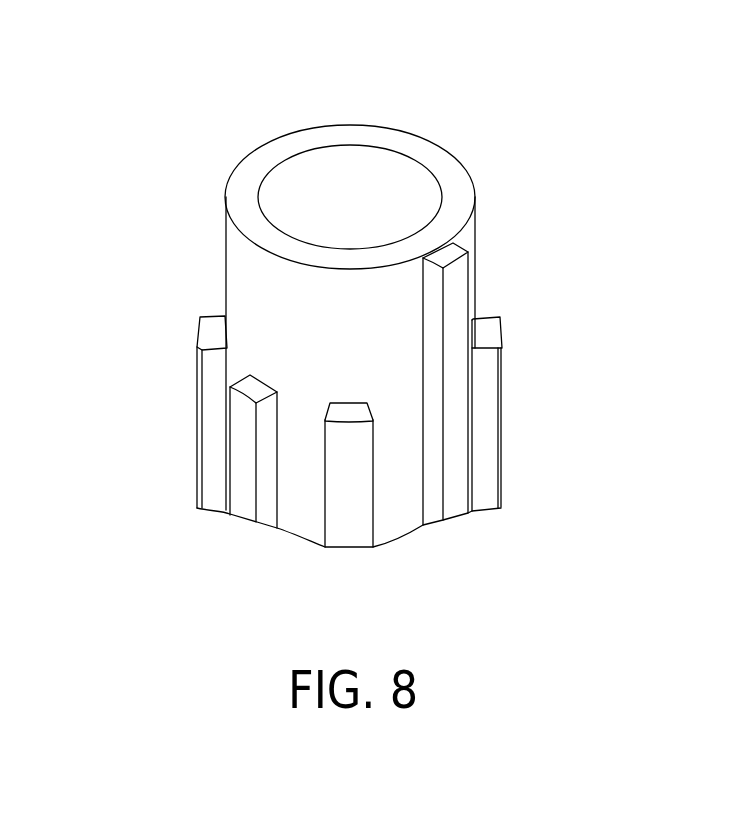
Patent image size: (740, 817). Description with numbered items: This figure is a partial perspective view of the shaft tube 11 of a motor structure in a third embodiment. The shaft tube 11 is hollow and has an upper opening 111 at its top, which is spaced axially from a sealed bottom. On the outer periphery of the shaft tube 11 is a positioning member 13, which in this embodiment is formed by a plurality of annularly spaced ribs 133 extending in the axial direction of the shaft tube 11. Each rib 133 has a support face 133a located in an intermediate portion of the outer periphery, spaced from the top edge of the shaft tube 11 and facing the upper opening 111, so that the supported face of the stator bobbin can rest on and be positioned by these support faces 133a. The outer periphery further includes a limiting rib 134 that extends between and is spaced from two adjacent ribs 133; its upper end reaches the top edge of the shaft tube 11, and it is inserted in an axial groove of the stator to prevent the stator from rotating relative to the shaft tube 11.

The shaft tube 11 is at (238, 245).
The upper opening 111 is at (440, 193).
The positioning member 13 is at (188, 265).
The ribs 133 is at (213, 393).
The support face 133a is at (212, 338).
The limiting rib 134 is at (455, 427).